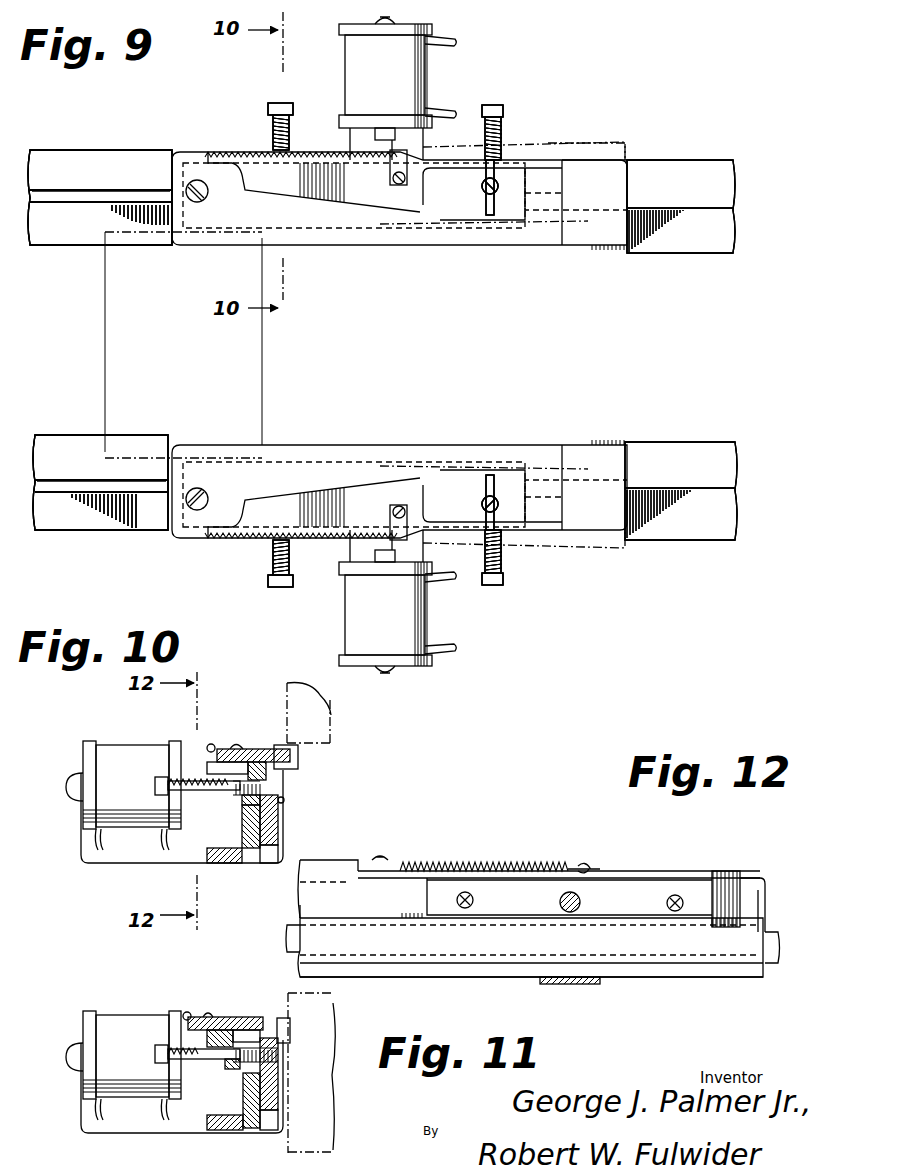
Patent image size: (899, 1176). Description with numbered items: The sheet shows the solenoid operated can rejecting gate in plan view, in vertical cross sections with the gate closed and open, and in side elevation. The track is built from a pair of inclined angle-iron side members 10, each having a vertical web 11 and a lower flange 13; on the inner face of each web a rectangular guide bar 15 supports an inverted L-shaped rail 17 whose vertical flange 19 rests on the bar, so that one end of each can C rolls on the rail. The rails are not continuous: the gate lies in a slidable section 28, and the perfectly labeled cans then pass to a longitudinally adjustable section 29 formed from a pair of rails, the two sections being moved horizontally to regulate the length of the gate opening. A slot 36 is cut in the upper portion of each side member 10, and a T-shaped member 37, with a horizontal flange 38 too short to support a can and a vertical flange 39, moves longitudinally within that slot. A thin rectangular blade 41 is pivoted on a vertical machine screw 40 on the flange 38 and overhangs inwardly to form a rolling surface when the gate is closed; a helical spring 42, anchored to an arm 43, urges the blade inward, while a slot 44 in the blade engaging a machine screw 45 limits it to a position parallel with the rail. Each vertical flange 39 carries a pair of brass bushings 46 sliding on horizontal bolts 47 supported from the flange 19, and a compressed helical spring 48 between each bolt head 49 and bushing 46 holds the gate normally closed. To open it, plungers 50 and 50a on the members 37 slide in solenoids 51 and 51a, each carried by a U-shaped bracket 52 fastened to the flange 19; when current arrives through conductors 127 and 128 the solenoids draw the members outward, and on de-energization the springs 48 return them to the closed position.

In FIG. 9, the side member 10 is at (116, 149).
In FIG. 10, the side member 10 is at (714, 533).
In FIG. 12, the side member 10 is at (250, 862).
In FIG. 11, the side member 10 is at (246, 1135).
In FIG. 9, the web 11 is at (84, 194).
In FIG. 10, the web 11 is at (120, 485).
In FIG. 12, the web 11 is at (690, 965).
In FIG. 9, the lower flange 13 is at (62, 155).
In FIG. 10, the lower flange 13 is at (135, 525).
In FIG. 12, the lower flange 13 is at (228, 858).
In FIG. 11, the lower flange 13 is at (222, 1128).
In FIG. 12, the guide bar 15 is at (278, 818).
In FIG. 11, the guide bar 15 is at (275, 1105).
In FIG. 9, the rail 17 is at (92, 237).
In FIG. 10, the rail 17 is at (83, 434).
In FIG. 12, the rail 17 is at (300, 758).
In FIG. 11, the rail 17 is at (290, 1040).
In FIG. 12, the vertical flange 19 is at (298, 910).
In FIG. 9, the section 28 is at (100, 123).
In FIG. 10, the section 28 is at (93, 558).
In FIG. 9, the longitudinally adjustable section 29 is at (647, 260).
In FIG. 10, the longitudinally adjustable section 29 is at (672, 438).
In FIG. 9, the slot 36 is at (556, 150).
In FIG. 12, the slot 36 is at (752, 878).
In FIG. 9, the member 37 is at (337, 198).
In FIG. 10, the member 37 is at (350, 497).
In FIG. 12, the member 37 is at (268, 773).
In FIG. 12, the horizontal flange 38 is at (628, 871).
In FIG. 12, the vertical flange 39 is at (632, 913).
In FIG. 9, the machine screw 40 is at (205, 200).
In FIG. 10, the machine screw 40 is at (206, 489).
In FIG. 12, the machine screw 40 is at (238, 745).
In FIG. 11, the machine screw 40 is at (220, 1013).
In FIG. 9, the blade 41 is at (528, 247).
In FIG. 10, the blade 41 is at (560, 450).
In FIG. 12, the blade 41 is at (274, 748).
In FIG. 11, the blade 41 is at (240, 1017).
In FIG. 9, the helical spring 42 is at (238, 150).
In FIG. 10, the helical spring 42 is at (250, 540).
In FIG. 12, the helical spring 42 is at (211, 744).
In FIG. 11, the helical spring 42 is at (188, 1012).
In FIG. 9, the arm 43 is at (390, 172).
In FIG. 10, the arm 43 is at (408, 520).
In FIG. 12, the arm 43 is at (588, 866).
In FIG. 9, the slot 44 is at (484, 210).
In FIG. 10, the slot 44 is at (489, 472).
In FIG. 9, the machine screw 45 is at (482, 186).
In FIG. 10, the machine screw 45 is at (499, 504).
In FIG. 12, the brass bushing 46 is at (240, 800).
In FIG. 11, the brass bushing 46 is at (238, 1065).
In FIG. 9, the bolt 47 is at (289, 132).
In FIG. 10, the bolt 47 is at (289, 540).
In FIG. 12, the bolt 47 is at (210, 793).
In FIG. 11, the bolt 47 is at (208, 1062).
In FIG. 9, the helical spring 48 is at (272, 112).
In FIG. 10, the helical spring 48 is at (290, 556).
In FIG. 12, the helical spring 48 is at (190, 778).
In FIG. 9, the head 49 is at (303, 89).
In FIG. 10, the head 49 is at (270, 585).
In FIG. 12, the head 49 is at (154, 786).
In FIG. 11, the head 49 is at (154, 1054).
In FIG. 9, the plunger 50 is at (395, 136).
In FIG. 12, the plunger 50 is at (205, 768).
In FIG. 11, the plunger 50 is at (196, 1040).
In FIG. 10, the plunger 50a is at (398, 553).
In FIG. 9, the solenoid 51 is at (418, 72).
In FIG. 12, the solenoid 51 is at (118, 742).
In FIG. 11, the solenoid 51 is at (118, 1011).
In FIG. 10, the solenoid 51a is at (420, 620).
In FIG. 9, the U-shaped bracket 52 is at (358, 136).
In FIG. 10, the U-shaped bracket 52 is at (422, 672).
In FIG. 12, the U-shaped bracket 52 is at (80, 849).
In FIG. 11, the U-shaped bracket 52 is at (150, 1134).
In FIG. 9, the conductor 127 is at (470, 97).
In FIG. 10, the conductor 127 is at (452, 582).
In FIG. 9, the conductor 128 is at (457, 42).
In FIG. 10, the conductor 128 is at (458, 652).
In FIG. 9, the can C is at (262, 352).
In FIG. 10, the can C is at (322, 703).
In FIG. 12, the can C is at (332, 703).
In FIG. 11, the can C is at (330, 1100).